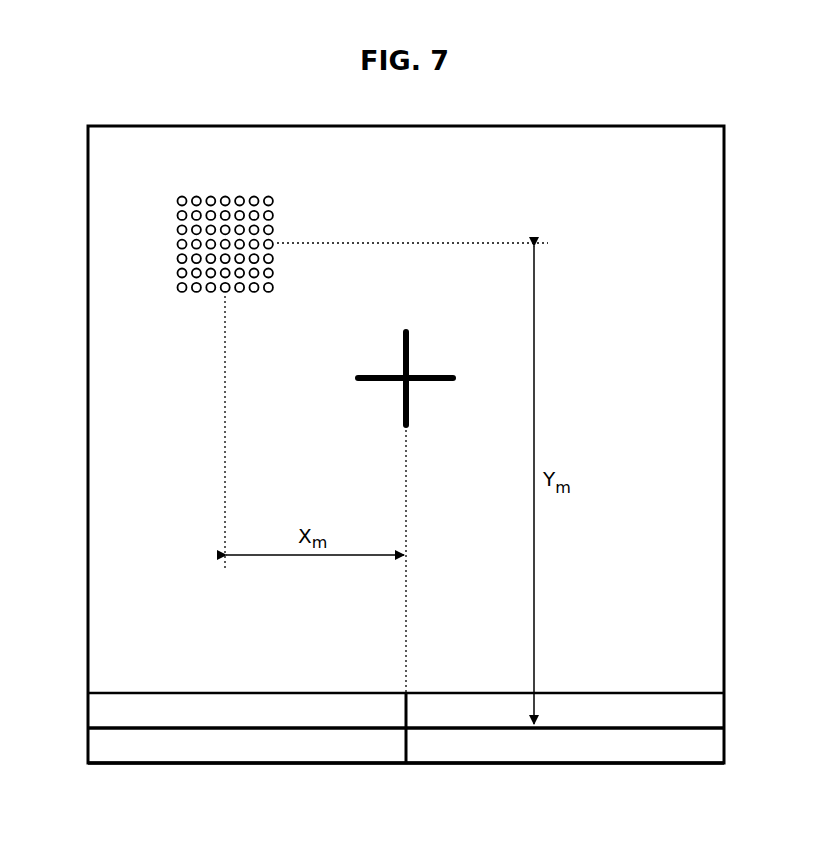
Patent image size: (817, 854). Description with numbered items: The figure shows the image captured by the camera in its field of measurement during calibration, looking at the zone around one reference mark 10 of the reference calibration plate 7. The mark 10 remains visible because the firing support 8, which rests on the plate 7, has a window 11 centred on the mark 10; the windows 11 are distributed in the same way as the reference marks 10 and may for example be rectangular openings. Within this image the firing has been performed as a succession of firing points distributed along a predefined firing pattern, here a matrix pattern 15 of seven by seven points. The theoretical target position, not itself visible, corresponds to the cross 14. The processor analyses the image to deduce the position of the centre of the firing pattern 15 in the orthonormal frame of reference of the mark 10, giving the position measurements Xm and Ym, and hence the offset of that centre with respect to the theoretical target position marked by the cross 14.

The reference calibration plate 7 is at (680, 748).
The firing support 8 is at (680, 553).
The reference mark 10 is at (338, 730).
The window 11 is at (238, 766).
The cross 14 is at (416, 356).
The matrix pattern 15 is at (286, 223).